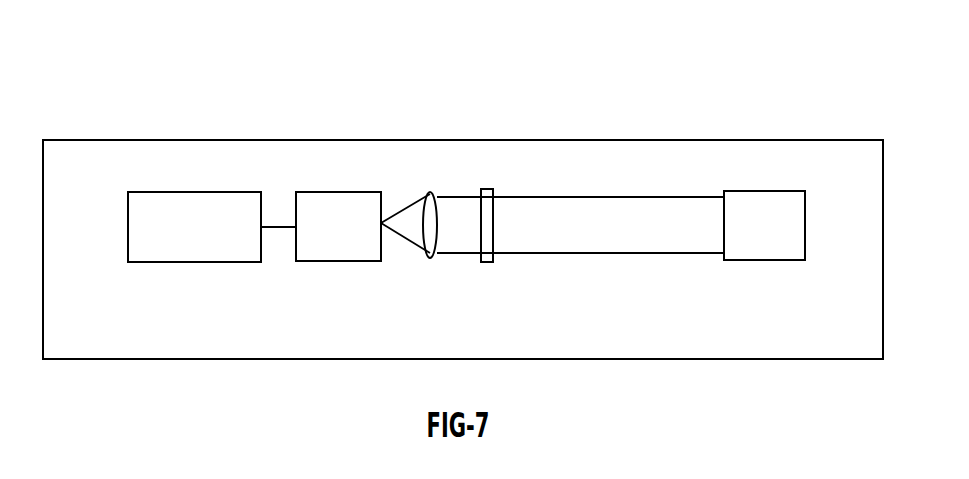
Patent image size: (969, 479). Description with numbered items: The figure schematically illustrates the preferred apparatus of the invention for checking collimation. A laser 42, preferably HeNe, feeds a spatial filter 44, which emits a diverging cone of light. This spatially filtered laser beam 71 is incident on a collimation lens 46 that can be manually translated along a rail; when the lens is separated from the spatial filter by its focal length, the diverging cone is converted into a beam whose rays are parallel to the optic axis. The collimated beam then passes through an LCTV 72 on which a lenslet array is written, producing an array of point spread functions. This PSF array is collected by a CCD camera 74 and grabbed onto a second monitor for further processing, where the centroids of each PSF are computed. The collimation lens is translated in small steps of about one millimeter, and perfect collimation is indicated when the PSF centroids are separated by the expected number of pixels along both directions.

The laser 42 is at (216, 199).
The spatial filter 44 is at (344, 199).
The spatially filtered laser beam 71 is at (415, 217).
The collimation lens 46 is at (432, 194).
The LCTV 72 is at (487, 189).
The CCD camera 74 is at (765, 195).